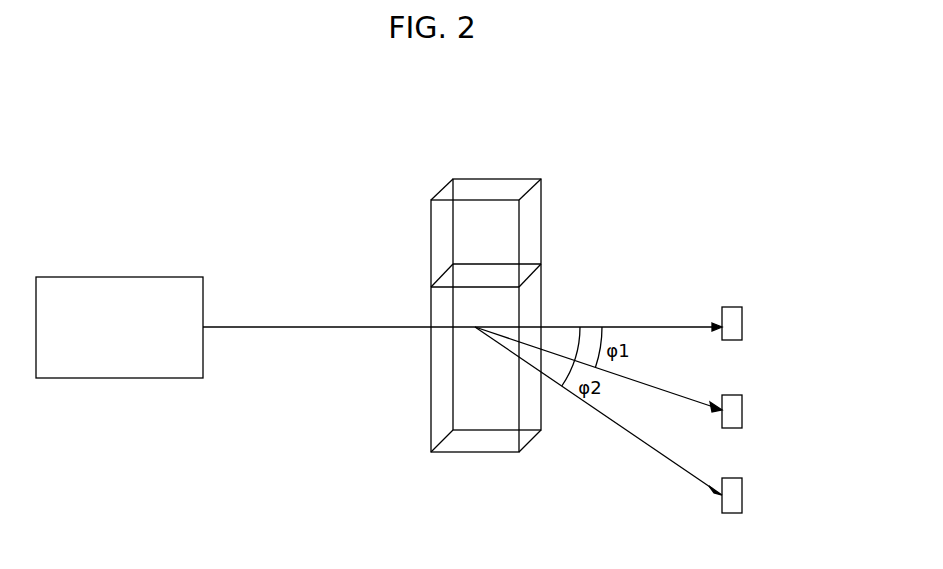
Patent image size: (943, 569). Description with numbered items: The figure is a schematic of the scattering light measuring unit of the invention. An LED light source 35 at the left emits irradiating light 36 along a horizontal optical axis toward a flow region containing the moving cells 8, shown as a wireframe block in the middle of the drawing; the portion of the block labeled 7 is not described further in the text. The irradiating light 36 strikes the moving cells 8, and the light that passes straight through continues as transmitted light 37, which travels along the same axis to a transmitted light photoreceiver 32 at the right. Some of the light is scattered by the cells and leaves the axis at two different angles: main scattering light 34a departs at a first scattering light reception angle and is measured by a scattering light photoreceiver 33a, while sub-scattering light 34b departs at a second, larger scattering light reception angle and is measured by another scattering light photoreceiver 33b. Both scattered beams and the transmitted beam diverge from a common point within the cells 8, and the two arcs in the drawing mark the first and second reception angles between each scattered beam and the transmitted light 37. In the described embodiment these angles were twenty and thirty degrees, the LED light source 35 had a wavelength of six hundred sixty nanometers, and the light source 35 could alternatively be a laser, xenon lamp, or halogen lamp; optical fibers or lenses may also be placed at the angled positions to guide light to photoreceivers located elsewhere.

The acousto-optic element (crystal) 7 is at (516, 284).
The moving cells 8 is at (494, 185).
The transmitted light photoreceiver 32 is at (737, 320).
The scattering light photoreceiver 33a is at (737, 415).
The scattering light photoreceiver 33b is at (737, 503).
The main scattering light 34a is at (692, 400).
The sub-scattering light 34b is at (630, 435).
The LED light source 35 is at (64, 295).
The irradiating light 36 is at (235, 325).
The transmitted light 37 is at (648, 325).